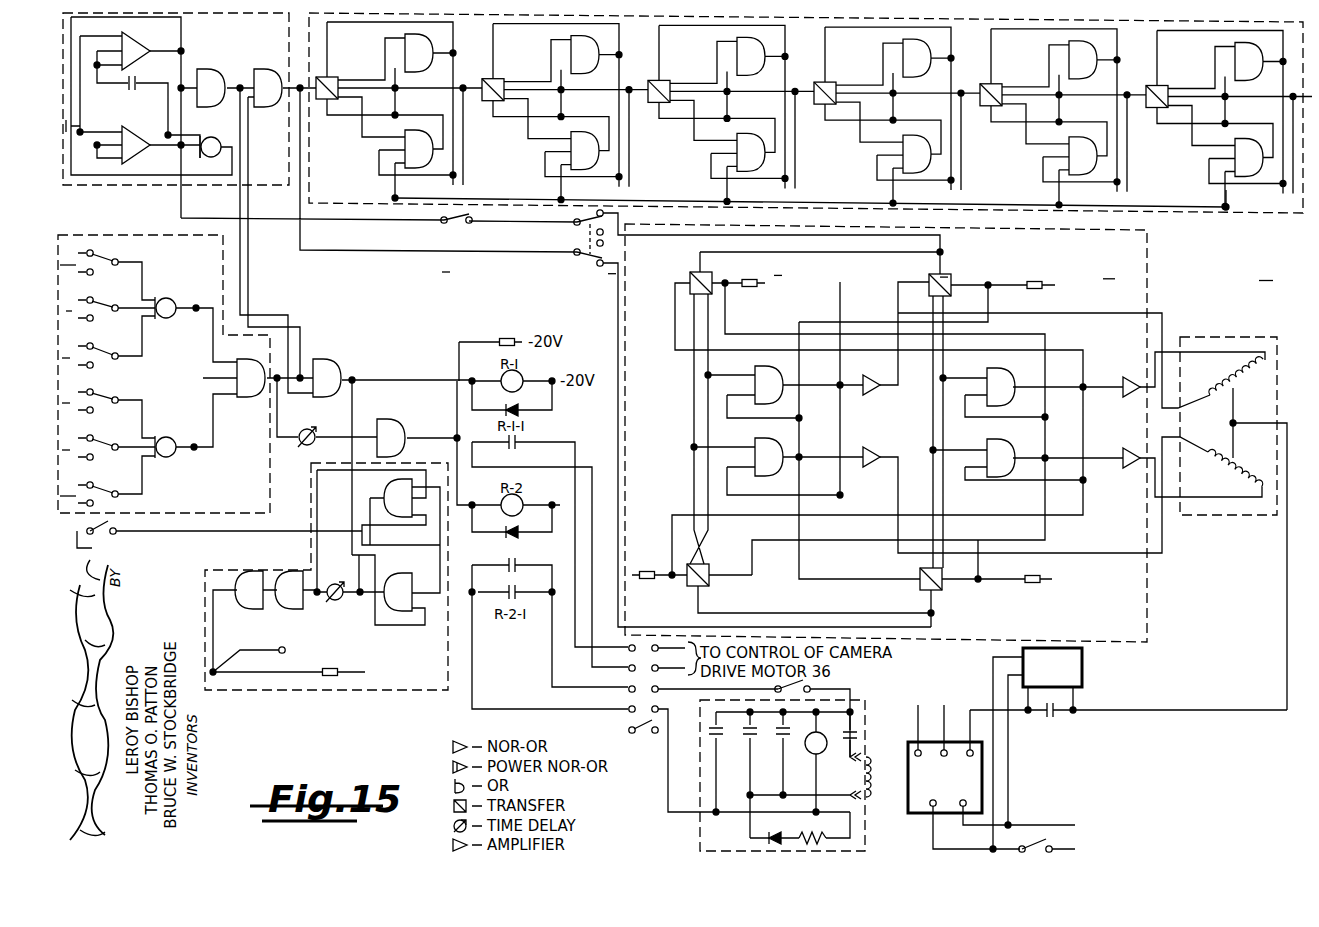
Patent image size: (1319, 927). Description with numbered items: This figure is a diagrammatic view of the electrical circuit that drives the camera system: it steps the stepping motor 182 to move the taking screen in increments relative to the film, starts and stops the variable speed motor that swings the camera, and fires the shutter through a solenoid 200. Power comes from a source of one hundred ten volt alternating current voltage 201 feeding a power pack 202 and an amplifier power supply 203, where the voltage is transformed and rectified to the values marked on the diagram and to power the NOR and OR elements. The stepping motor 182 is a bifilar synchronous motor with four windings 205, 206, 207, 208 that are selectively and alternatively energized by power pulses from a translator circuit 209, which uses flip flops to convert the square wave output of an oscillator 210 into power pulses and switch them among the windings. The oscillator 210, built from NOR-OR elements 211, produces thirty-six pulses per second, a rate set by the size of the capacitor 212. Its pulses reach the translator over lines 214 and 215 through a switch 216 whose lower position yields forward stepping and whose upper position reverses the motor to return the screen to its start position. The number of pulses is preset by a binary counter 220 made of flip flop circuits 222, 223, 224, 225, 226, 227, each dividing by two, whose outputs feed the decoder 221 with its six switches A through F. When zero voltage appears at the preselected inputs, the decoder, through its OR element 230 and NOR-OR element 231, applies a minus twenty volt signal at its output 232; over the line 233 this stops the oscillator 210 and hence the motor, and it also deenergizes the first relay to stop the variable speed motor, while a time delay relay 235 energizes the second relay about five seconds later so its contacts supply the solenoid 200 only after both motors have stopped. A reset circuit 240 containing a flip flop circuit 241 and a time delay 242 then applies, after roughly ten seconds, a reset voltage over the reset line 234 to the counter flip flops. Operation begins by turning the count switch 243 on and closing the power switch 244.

The stepping motor 182 is at (1257, 332).
The solenoid 200 is at (802, 775).
The source of 110 volt alternating current voltage 201 is at (855, 789).
The power pack 202 is at (916, 808).
The amplifier power supply 203 is at (1085, 661).
The winding 205 is at (1257, 378).
The winding 206 is at (1222, 382).
The winding 207 is at (1232, 452).
The winding 208 is at (1250, 478).
The translator circuit 209 is at (1150, 255).
The oscillator 210 is at (270, 187).
The NOR-OR elements 211 is at (138, 138).
The capacitor 212 is at (127, 87).
The line 214 is at (731, 233).
The line 215 is at (723, 445).
The switch 216 is at (571, 238).
The binary counter 220 is at (375, 207).
The decoder 221 is at (188, 516).
The flip flop circuit 222 is at (358, 22).
The flip flop circuit 223 is at (524, 24).
The flip flop circuit 224 is at (690, 26).
The flip flop circuit 225 is at (856, 28).
The flip flop circuit 226 is at (1022, 29).
The flip flop circuit 227 is at (1188, 31).
The OR element 230 is at (172, 472).
The NOR-OR element 231 is at (242, 400).
The output 232 is at (302, 392).
The line 233 is at (278, 313).
The reset line 234 is at (1250, 208).
The time delay relay 235 is at (305, 452).
The reset circuit 240 is at (292, 690).
The flip flop circuit 241 is at (439, 529).
The time delay 242 is at (335, 603).
The count switch 243 is at (110, 522).
The power switch 244 is at (1026, 840).